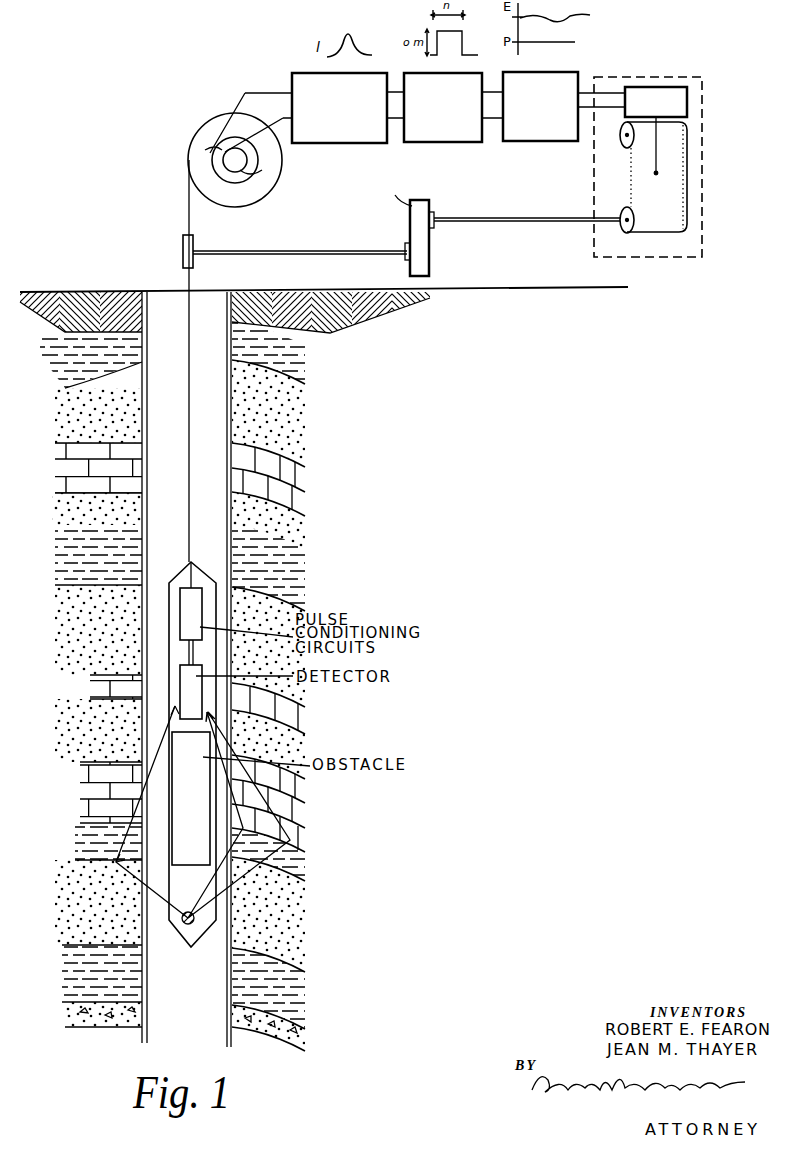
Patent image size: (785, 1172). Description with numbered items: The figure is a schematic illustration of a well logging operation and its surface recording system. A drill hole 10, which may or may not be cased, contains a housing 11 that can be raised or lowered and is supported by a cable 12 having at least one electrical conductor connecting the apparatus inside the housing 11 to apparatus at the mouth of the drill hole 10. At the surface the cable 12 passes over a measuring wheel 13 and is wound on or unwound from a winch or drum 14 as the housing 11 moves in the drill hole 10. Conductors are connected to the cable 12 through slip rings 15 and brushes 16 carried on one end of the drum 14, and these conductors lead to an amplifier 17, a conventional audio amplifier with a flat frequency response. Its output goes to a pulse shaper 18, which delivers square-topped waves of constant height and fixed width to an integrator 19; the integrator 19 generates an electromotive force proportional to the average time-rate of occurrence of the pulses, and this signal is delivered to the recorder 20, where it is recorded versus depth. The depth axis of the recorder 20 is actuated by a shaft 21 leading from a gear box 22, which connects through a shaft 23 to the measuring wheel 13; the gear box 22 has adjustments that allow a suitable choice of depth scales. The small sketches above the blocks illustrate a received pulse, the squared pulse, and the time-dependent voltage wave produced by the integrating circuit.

The drill hole 10 is at (229, 548).
The housing 11 is at (164, 600).
The cable 12 is at (190, 432).
The measuring wheel 13 is at (183, 246).
The winch or drum 14 is at (250, 207).
The slip rings 15 is at (248, 158).
The brushes 16 is at (215, 155).
The amplifier 17 is at (372, 143).
The pulse shaper 18 is at (468, 142).
The integrator 19 is at (565, 141).
The recorder 20 is at (700, 168).
The shaft 21 is at (570, 226).
The gear box 22 is at (423, 244).
The shaft 23 is at (280, 252).